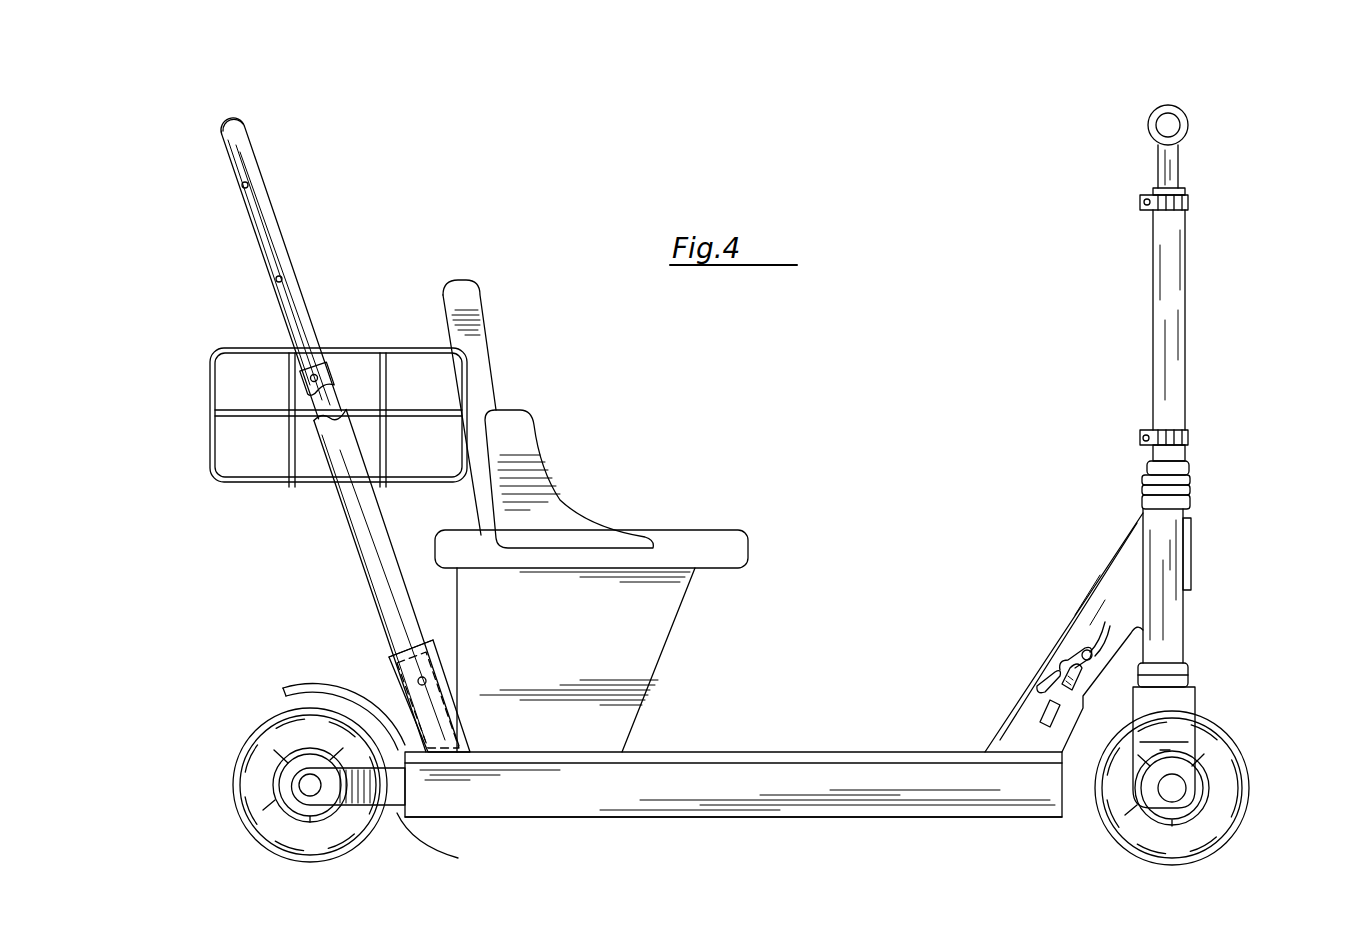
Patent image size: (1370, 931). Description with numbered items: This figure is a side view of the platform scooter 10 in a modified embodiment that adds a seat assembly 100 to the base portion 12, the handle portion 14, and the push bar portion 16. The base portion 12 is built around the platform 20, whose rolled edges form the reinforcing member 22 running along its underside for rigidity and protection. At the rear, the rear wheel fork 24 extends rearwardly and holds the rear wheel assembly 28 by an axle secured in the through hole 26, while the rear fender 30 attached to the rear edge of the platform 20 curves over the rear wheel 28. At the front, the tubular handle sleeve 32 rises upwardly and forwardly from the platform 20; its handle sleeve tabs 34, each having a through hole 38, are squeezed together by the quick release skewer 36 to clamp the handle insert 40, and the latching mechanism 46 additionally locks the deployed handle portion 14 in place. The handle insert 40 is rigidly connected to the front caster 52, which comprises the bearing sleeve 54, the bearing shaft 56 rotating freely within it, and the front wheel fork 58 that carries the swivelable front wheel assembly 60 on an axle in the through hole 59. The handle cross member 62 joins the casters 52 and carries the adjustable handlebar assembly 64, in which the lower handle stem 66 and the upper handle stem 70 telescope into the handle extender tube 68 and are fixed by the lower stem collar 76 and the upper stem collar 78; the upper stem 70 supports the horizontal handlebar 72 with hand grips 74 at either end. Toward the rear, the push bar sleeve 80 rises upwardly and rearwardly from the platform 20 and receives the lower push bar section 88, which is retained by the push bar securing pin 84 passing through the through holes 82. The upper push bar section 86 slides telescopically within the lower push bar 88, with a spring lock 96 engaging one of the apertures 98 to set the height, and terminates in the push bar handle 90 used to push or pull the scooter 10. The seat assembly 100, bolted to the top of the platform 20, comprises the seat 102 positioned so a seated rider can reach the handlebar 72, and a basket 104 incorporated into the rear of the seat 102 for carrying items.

The platform scooter 10 is at (922, 178).
The base portion 12 is at (797, 745).
The handle portion 14 is at (1212, 410).
The push bar portion 16 is at (330, 213).
The platform 20 is at (718, 760).
The reinforcing member 22 is at (700, 815).
The rear wheel fork 24 is at (402, 818).
The through hole 26 is at (314, 798).
The rear wheel assembly 28 is at (258, 778).
The rear fender 30 is at (290, 690).
The handle sleeve 32 is at (1010, 735).
The handle sleeve tab 34 is at (1067, 676).
The quick release skewer 36 is at (1055, 715).
The through hole 38 is at (1066, 668).
The handle insert 40 is at (1050, 680).
The latching mechanism 46 is at (1087, 625).
The front caster 52 is at (1200, 662).
The bearing sleeve 54 is at (1178, 623).
The bearing shaft 56 is at (1178, 471).
The front wheel fork 58 is at (1182, 711).
The through hole 59 is at (1184, 798).
The front wheel assembly 60 is at (1218, 766).
The handle cross member 62 is at (1191, 553).
The adjustable handlebar assembly 64 is at (1232, 185).
The lower handle stem 66 is at (1152, 455).
The handle extender tube 68 is at (1180, 316).
The upper handle stem 70 is at (1160, 162).
The handlebar 72 is at (1181, 124).
The hand grip 74 is at (1166, 105).
The lower stem collar 76 is at (1140, 436).
The upper stem collar 78 is at (1140, 204).
The push bar sleeve 80 is at (458, 740).
The through hole 82 is at (427, 680).
The push bar securing pin 84 is at (390, 655).
The upper push bar section 86 is at (268, 258).
The lower push bar section 88 is at (352, 524).
The push bar handle 90 is at (230, 127).
The spring lock 96 is at (282, 277).
The aperture 98 is at (322, 363).
The seat assembly 100 is at (600, 375).
The seat 102 is at (665, 530).
The basket 104 is at (207, 393).